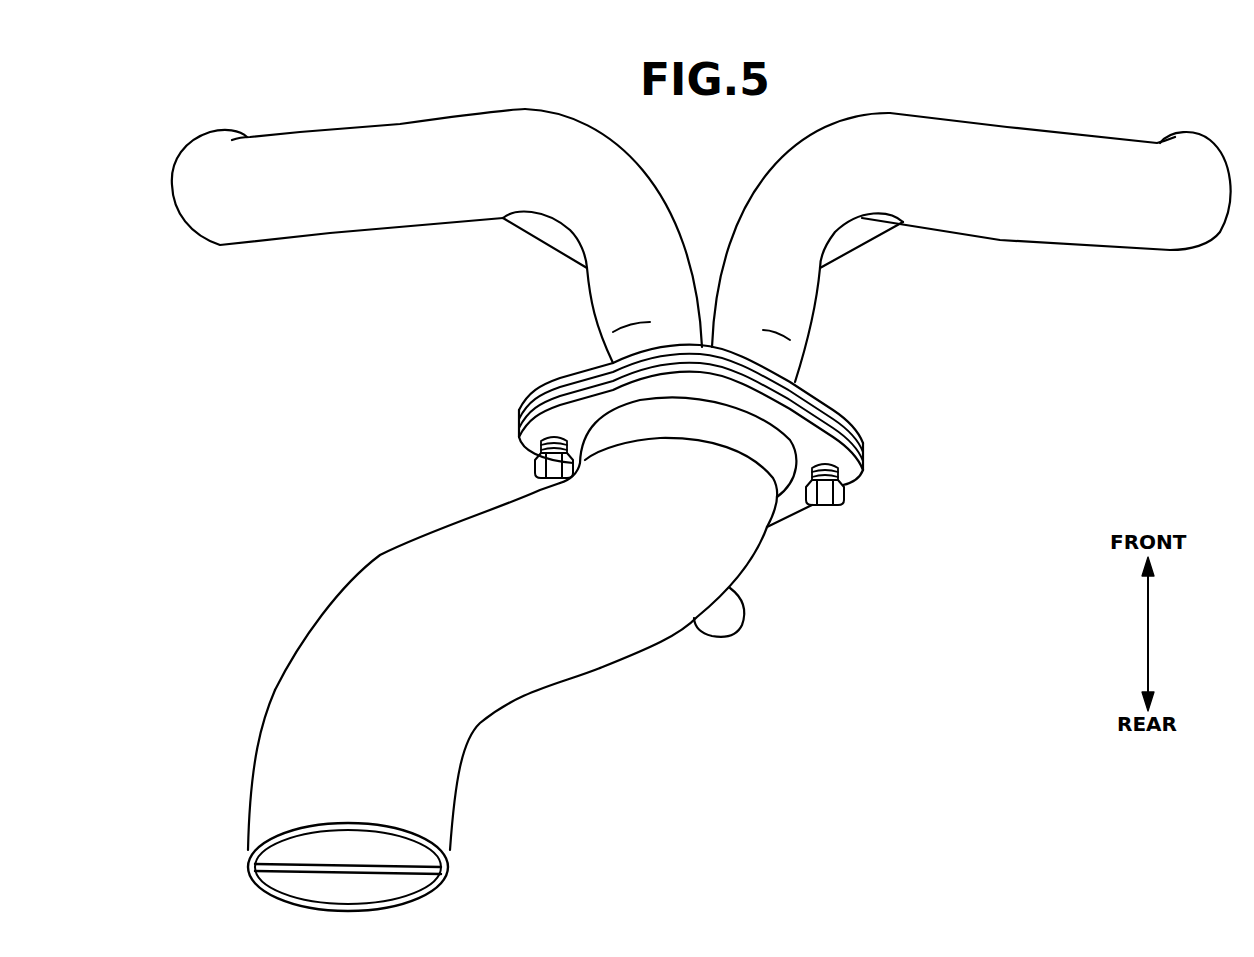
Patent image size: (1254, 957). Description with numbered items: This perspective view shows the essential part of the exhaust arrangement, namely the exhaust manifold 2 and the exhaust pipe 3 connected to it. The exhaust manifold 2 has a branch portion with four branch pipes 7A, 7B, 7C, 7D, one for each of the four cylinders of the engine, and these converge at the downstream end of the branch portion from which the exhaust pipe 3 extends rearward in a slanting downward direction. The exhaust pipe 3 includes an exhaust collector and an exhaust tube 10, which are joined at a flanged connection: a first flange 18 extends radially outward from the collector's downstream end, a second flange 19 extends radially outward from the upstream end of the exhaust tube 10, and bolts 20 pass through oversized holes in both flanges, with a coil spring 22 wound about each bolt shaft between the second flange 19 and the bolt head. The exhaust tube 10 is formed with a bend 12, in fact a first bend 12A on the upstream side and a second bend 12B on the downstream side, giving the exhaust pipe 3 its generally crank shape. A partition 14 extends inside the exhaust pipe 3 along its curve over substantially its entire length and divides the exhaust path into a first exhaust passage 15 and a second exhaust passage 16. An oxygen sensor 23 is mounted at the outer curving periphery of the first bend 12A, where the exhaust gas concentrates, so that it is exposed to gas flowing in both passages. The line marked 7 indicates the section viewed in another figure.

The exhaust manifold 2 is at (707, 245).
The exhaust pipe 3 is at (528, 674).
The branch pipe 7A is at (210, 213).
The branch pipe 7B is at (520, 223).
The branch pipe 7C is at (880, 233).
The branch pipe 7D is at (1203, 203).
The section line of FIG. 7 is at (488, 492).
The exhaust tube 10 is at (402, 789).
The bend 12 is at (541, 583).
The first bend 12A is at (670, 617).
The second bend 12B is at (382, 555).
The partition 14 is at (390, 864).
The first exhaust passage 15 is at (305, 848).
The second exhaust passage 16 is at (303, 887).
The first flange 18 is at (860, 440).
The second flange 19 is at (862, 468).
The bolt 20 is at (545, 472).
The coil spring 22 is at (540, 443).
The oxygen sensor 23 is at (727, 620).